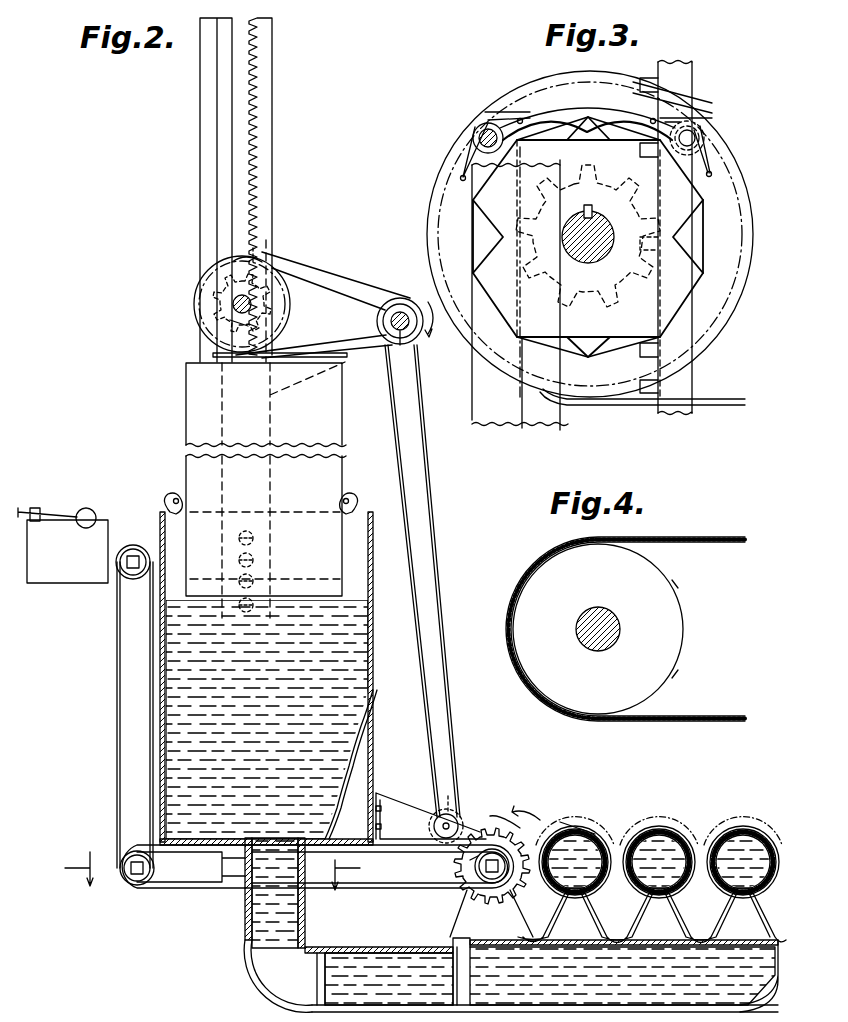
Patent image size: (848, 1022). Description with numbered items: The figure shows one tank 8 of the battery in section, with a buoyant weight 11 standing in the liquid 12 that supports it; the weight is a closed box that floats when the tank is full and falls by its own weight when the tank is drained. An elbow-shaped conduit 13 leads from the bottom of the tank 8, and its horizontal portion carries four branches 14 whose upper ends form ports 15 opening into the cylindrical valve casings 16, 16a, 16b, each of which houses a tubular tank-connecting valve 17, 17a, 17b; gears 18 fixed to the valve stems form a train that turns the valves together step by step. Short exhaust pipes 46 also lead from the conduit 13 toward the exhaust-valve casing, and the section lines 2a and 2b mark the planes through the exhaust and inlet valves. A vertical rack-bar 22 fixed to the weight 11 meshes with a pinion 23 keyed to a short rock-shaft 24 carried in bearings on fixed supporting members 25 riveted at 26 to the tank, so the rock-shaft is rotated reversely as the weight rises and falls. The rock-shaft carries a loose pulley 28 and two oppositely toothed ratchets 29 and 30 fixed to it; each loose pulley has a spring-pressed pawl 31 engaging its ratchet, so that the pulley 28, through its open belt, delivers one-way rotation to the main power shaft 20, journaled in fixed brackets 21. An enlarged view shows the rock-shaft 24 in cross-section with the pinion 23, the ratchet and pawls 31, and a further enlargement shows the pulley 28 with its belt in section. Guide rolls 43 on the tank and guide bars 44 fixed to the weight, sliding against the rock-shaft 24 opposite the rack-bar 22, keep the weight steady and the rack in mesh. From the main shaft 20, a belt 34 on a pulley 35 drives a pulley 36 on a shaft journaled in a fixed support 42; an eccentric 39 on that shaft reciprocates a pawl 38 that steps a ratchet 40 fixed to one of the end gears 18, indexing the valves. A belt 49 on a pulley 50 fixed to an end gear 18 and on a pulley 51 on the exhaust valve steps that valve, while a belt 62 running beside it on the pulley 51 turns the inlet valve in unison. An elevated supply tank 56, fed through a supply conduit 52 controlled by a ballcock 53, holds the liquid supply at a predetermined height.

In FIG. 2, the tank 8 is at (360, 738).
In FIG. 2, the buoyant weight 11 is at (196, 384).
In FIG. 2, the liquid 12 is at (352, 632).
In FIG. 2, the conduit 13 is at (306, 905).
In FIG. 2, the branches 14 is at (540, 900).
In FIG. 2, the ports 15 is at (590, 897).
In FIG. 2, the valve casing 16 is at (758, 812).
In FIG. 2, the valve casing 16a is at (662, 812).
In FIG. 2, the valve casing 16b is at (594, 810).
In FIG. 2, the tank-connecting valve 17 is at (748, 826).
In FIG. 2, the tank-connecting valve 17a is at (654, 826).
In FIG. 2, the tank-connecting valve 17b is at (573, 826).
In FIG. 2, the gears 18 is at (466, 858).
In FIG. 2, the main power shaft 20 is at (390, 322).
In FIG. 2, the brackets 21 is at (340, 286).
In FIG. 2, the rack-bar 22 is at (276, 112).
In FIG. 3, the rack-bar 22 is at (694, 348).
In FIG. 2, the pinion 23 is at (240, 286).
In FIG. 3, the pinion 23 is at (660, 250).
In FIG. 2, the rock-shaft 24 is at (233, 303).
In FIG. 3, the rock-shaft 24 is at (594, 262).
In FIG. 4, the rock-shaft 24 is at (600, 648).
In FIG. 2, the supporting members 25 is at (254, 246).
In FIG. 2, the rivets 26 is at (238, 538).
In FIG. 2, the loose pulley 28 is at (282, 316).
In FIG. 3, the loose pulley 28 is at (726, 182).
In FIG. 4, the loose pulley 28 is at (678, 626).
In FIG. 3, the ratchet 29 is at (517, 318).
In FIG. 2, the ratchet 30 is at (240, 325).
In FIG. 3, the ratchet 30 is at (493, 286).
In FIG. 2, the spring-pressed pawl 31 is at (262, 262).
In FIG. 3, the spring-pressed pawl 31 is at (545, 120).
In FIG. 2, the belt 34 is at (432, 500).
In FIG. 2, the pulley 35 is at (401, 340).
In FIG. 2, the pulley 36 is at (444, 796).
In FIG. 2, the pawl 38 is at (490, 822).
In FIG. 2, the eccentric 39 is at (432, 826).
In FIG. 2, the ratchet 40 is at (560, 808).
In FIG. 2, the fixed support 42 is at (390, 806).
In FIG. 2, the guide rolls 43 is at (172, 494).
In FIG. 2, the guide bars 44 is at (205, 110).
In FIG. 2, the exhaust pipes 46 is at (198, 880).
In FIG. 2, the belt 49 is at (392, 885).
In FIG. 2, the pulley 50 is at (474, 868).
In FIG. 2, the pulley 51 is at (150, 866).
In FIG. 2, the supply conduit 52 is at (30, 508).
In FIG. 2, the ballcock 53 is at (44, 514).
In FIG. 2, the supply tank 56 is at (108, 530).
In FIG. 2, the belt 62 is at (117, 640).
In FIG. 2, the section line 2a is at (202, 871).
In FIG. 2, the section line 2b is at (116, 562).